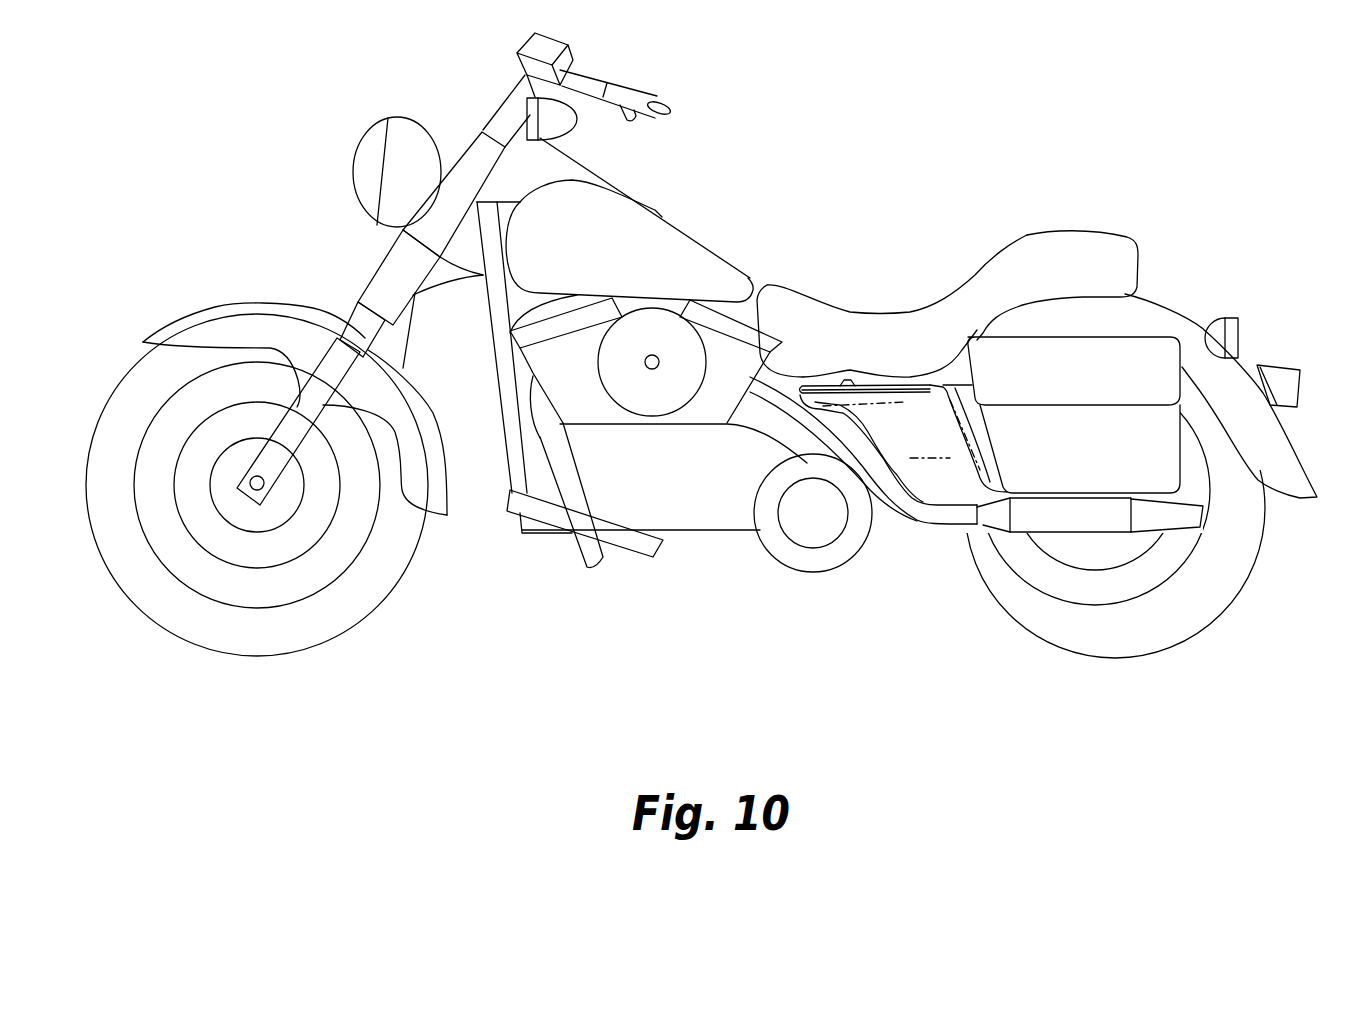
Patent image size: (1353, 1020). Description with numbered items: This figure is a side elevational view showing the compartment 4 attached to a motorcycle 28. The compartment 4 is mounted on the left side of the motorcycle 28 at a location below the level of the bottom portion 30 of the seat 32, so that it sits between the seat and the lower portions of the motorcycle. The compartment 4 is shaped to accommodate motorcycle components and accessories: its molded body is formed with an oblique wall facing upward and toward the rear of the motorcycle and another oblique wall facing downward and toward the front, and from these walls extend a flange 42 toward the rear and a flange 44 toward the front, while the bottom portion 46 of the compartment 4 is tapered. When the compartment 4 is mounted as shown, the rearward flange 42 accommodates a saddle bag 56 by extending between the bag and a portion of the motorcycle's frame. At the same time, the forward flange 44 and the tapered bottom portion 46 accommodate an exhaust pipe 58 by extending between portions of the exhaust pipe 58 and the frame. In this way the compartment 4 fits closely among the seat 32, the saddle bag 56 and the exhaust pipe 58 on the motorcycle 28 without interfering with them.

The motorcycle 28 is at (722, 228).
The bottom portion of the seat 30 is at (822, 377).
The seat 32 is at (967, 285).
The flange 42 is at (977, 403).
The flange 44 is at (893, 458).
The compartment 4 is at (930, 485).
The bottom portion of the compartment 46 is at (972, 513).
The saddle bag 56 is at (1127, 353).
The exhaust pipe 58 is at (960, 516).